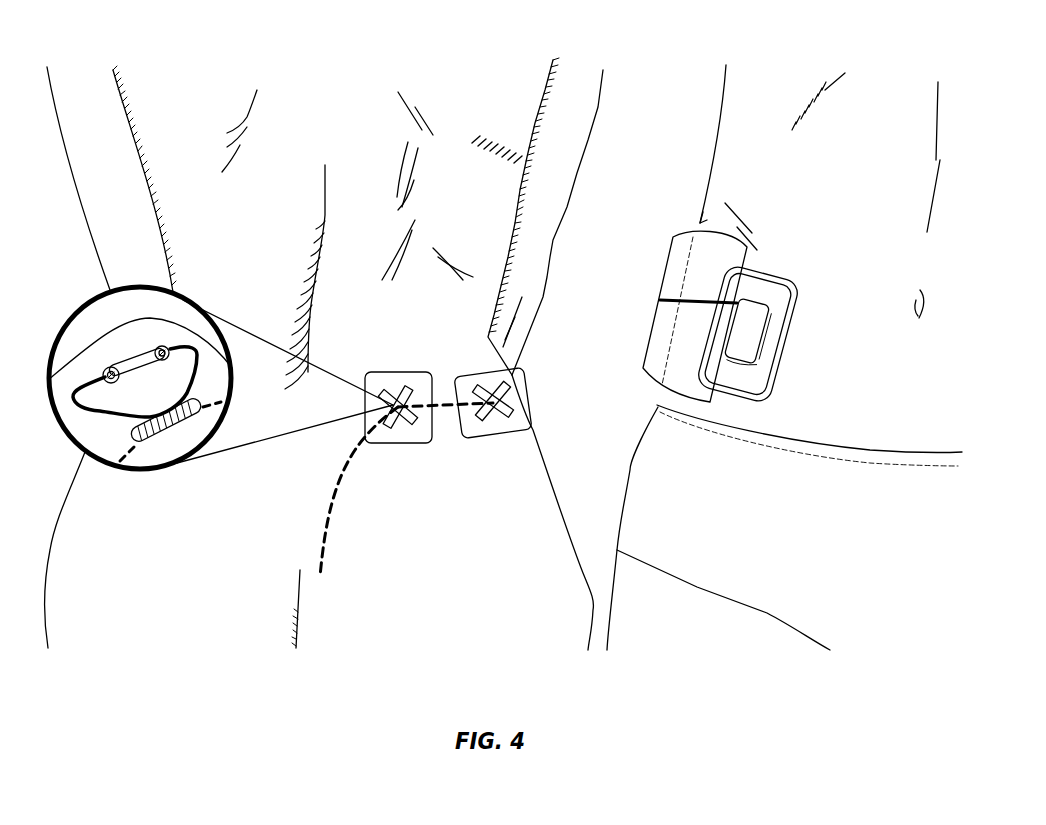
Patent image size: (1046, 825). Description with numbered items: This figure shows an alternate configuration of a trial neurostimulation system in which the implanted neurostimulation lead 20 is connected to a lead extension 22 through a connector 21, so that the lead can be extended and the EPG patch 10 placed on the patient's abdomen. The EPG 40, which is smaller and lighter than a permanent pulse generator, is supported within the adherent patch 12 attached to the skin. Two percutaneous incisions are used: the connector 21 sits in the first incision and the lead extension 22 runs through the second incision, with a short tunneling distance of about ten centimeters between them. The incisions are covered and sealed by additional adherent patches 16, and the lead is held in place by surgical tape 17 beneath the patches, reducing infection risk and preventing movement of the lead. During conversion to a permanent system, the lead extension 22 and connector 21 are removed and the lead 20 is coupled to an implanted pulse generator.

The EPG patch 10 is at (800, 367).
The adherent patch 12 is at (762, 278).
The additional adherent patch 16 is at (392, 383).
The surgical tape 17 is at (503, 397).
The neurostimulation lead 20 is at (91, 378).
The connector 21 is at (143, 357).
The lead extension 22 is at (200, 363).
The EPG 40 is at (767, 328).